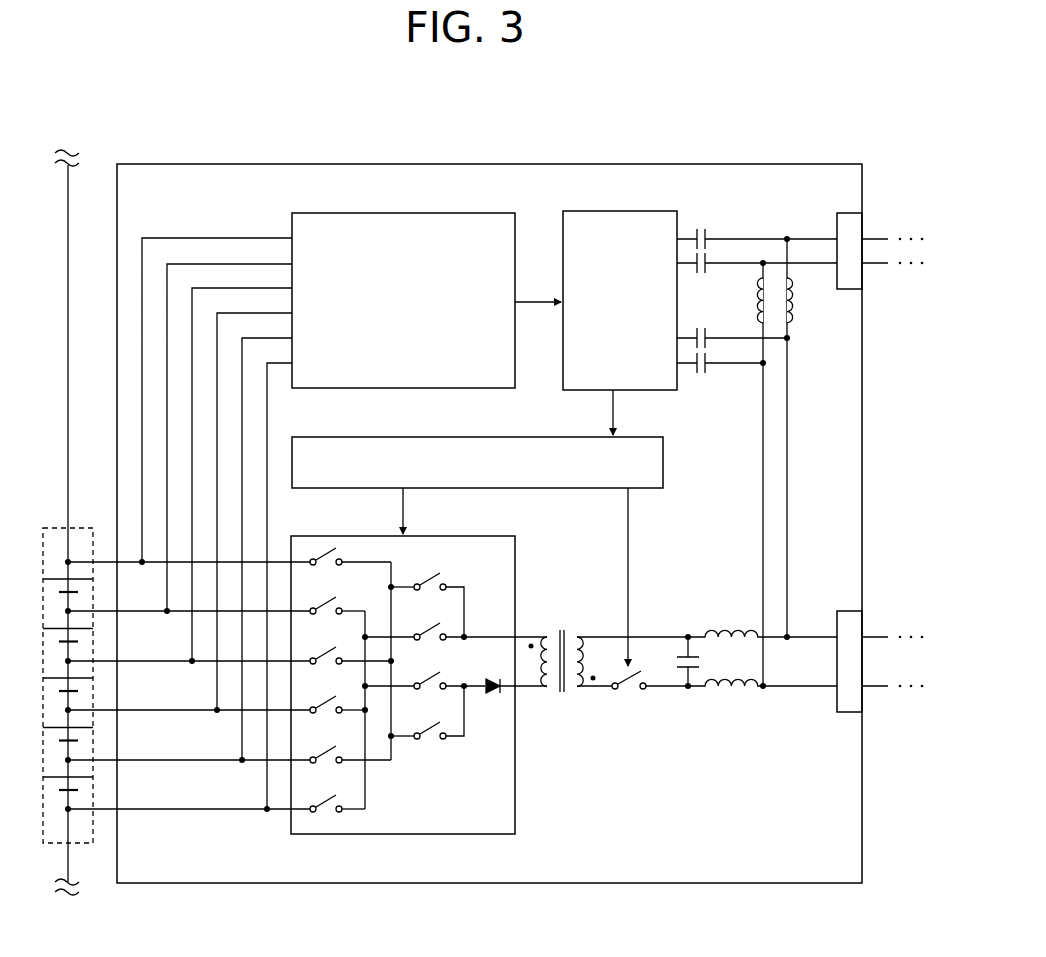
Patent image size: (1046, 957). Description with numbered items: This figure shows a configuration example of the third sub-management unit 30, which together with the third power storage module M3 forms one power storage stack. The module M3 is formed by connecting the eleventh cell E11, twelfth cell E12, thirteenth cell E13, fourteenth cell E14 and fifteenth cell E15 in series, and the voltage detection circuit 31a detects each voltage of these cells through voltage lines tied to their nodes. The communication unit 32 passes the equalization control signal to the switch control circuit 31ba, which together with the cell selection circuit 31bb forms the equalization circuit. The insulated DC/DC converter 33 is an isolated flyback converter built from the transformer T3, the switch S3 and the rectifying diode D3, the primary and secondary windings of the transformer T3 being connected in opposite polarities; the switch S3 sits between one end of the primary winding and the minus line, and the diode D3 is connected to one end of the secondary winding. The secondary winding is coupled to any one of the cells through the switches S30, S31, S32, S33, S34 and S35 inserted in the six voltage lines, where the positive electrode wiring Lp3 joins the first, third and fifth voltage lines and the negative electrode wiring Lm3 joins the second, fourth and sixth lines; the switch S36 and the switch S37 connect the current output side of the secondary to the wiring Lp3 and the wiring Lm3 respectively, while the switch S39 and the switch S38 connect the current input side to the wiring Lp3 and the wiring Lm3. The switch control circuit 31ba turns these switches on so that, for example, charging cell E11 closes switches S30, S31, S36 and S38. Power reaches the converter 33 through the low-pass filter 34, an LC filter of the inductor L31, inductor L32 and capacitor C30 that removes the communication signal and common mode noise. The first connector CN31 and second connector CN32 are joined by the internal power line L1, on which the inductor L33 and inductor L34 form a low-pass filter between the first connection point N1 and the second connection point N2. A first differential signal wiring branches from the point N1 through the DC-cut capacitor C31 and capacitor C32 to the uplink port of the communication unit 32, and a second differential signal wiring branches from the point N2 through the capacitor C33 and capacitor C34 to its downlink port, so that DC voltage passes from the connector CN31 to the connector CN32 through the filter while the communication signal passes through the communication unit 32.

The third sub-management unit 30 is at (833, 164).
The voltage detection circuit 31a is at (485, 213).
The communication unit 32 is at (635, 211).
The switch control circuit 31ba is at (633, 437).
The cell selection circuit 31bb is at (487, 536).
The insulated DC/DC converter 33 is at (609, 638).
The low-pass filter 34 is at (740, 633).
The third power storage module M3 is at (55, 527).
The eleventh cell E11 is at (50, 587).
The twelfth cell E12 is at (50, 636).
The thirteenth cell E13 is at (50, 686).
The fourteenth cell E14 is at (50, 735).
The fifteenth cell E15 is at (50, 785).
The switch S30 is at (350, 569).
The switch S31 is at (337, 618).
The switch S32 is at (350, 668).
The switch S33 is at (337, 717).
The switch S34 is at (350, 767).
The switch S35 is at (337, 816).
The switch S36 is at (427, 605).
The switch S37 is at (456, 644).
The switch S38 is at (425, 693).
The switch S39 is at (427, 725).
The switch S3 is at (650, 693).
The positive electrode wiring Lp3 is at (393, 572).
The negative electrode wiring Lm3 is at (367, 797).
The rectifying diode D3 is at (514, 697).
The transformer T3 is at (609, 668).
The capacitor C30 is at (671, 661).
The inductor L31 is at (762, 620).
The inductor L32 is at (762, 701).
The inductor L33 is at (811, 300).
The inductor L34 is at (739, 300).
The capacitor C31 is at (732, 328).
The capacitor C32 is at (720, 372).
The capacitor C33 is at (757, 231).
The capacitor C34 is at (757, 274).
The first connection point N1 is at (775, 360).
The second connection point N2 is at (769, 241).
The internal power line L1 is at (765, 606).
The first connector CN31 is at (862, 711).
The second connector CN32 is at (862, 288).